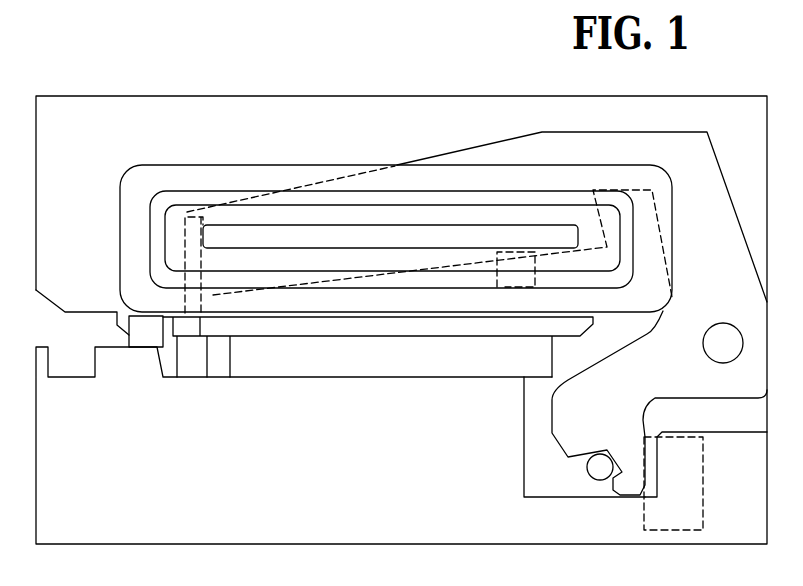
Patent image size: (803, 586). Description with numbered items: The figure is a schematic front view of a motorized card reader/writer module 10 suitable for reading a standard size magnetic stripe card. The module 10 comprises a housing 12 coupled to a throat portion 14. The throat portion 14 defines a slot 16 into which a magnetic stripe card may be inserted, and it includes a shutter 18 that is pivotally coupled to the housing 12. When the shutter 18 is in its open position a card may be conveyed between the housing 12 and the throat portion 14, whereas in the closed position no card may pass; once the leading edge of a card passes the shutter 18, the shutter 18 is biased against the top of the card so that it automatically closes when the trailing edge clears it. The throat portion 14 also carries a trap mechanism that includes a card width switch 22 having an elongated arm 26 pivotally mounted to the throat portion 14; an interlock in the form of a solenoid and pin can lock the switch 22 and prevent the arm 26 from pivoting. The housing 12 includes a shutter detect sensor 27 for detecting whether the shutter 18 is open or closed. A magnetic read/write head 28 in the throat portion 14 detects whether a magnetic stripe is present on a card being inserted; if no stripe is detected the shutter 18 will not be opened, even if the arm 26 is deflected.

The motorized card reader/writer module 10 is at (114, 54).
The housing 12 is at (357, 96).
The throat portion 14 is at (200, 164).
The slot 16 is at (322, 235).
The shutter 18 is at (482, 143).
The card width switch 22 is at (185, 243).
The elongated arm 26 is at (145, 335).
The shutter detect sensor 27 is at (685, 513).
The read/write head 28 is at (507, 293).